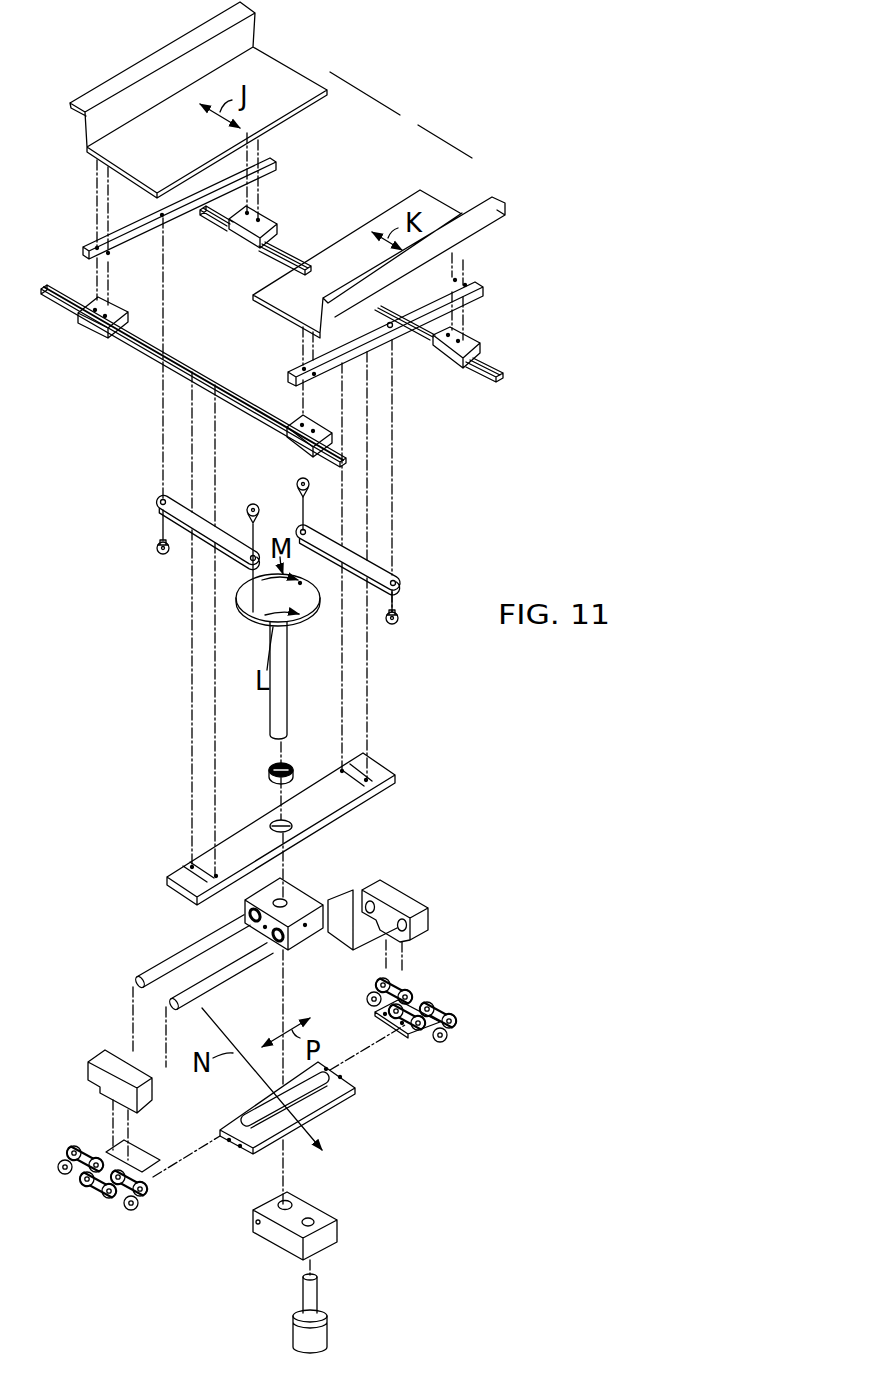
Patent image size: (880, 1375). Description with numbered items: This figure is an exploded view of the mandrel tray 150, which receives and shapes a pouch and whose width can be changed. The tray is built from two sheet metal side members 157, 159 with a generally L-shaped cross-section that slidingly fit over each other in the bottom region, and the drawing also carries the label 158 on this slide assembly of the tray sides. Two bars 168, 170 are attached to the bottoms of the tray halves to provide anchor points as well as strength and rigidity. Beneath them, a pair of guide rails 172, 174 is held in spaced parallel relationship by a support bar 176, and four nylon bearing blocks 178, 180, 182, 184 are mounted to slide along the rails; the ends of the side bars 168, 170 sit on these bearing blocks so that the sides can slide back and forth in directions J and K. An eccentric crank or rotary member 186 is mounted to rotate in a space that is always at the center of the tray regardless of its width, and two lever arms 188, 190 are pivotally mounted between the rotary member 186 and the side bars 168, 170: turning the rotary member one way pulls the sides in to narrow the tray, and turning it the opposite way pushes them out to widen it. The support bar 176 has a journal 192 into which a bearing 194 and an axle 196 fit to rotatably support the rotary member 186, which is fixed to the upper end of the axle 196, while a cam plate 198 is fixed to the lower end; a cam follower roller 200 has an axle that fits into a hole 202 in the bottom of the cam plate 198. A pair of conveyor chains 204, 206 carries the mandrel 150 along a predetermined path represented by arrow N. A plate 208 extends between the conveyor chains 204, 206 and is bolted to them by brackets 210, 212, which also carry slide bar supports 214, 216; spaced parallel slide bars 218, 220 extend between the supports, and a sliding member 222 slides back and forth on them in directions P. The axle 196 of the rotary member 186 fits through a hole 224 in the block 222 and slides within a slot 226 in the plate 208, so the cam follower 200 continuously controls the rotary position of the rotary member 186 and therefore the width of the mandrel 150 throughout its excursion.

The mandrel tray 150 is at (480, 92).
The sheet metal side member 157 is at (283, 64).
The slide assembly 158 is at (401, 115).
The sheet metal side member 159 is at (443, 203).
The bar 168 is at (96, 246).
The bar 170 is at (398, 338).
The guide rail 172 is at (150, 358).
The guide rail 174 is at (288, 240).
The support bar 176 is at (308, 820).
The nylon bearing block 178 is at (90, 320).
The nylon bearing block 180 is at (297, 450).
The nylon bearing block 182 is at (242, 243).
The nylon bearing block 184 is at (474, 331).
The rotary member 186 is at (253, 620).
The lever arm 188 is at (202, 542).
The lever arm 190 is at (370, 563).
The journal 192 is at (292, 826).
The bearing 194 is at (283, 763).
The axle 196 is at (288, 670).
The cam plate 198 is at (325, 1218).
The cam follower roller 200 is at (320, 1337).
The hole 202 is at (318, 1224).
The conveyor chain 204 is at (97, 1177).
The conveyor chain 206 is at (440, 995).
The plate 208 is at (312, 1117).
The bracket 210 is at (133, 1157).
The bracket 212 is at (412, 1030).
The slide bar support 214 is at (87, 1073).
The slide bar support 216 is at (428, 929).
The slide bar 218 is at (168, 960).
The slide bar 220 is at (235, 980).
The sliding member 222 is at (294, 919).
The hole 224 is at (285, 940).
The slot 226 is at (312, 1085).